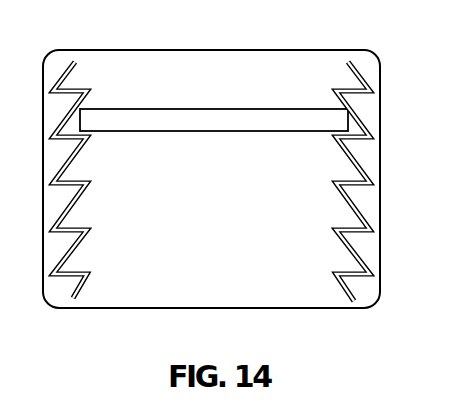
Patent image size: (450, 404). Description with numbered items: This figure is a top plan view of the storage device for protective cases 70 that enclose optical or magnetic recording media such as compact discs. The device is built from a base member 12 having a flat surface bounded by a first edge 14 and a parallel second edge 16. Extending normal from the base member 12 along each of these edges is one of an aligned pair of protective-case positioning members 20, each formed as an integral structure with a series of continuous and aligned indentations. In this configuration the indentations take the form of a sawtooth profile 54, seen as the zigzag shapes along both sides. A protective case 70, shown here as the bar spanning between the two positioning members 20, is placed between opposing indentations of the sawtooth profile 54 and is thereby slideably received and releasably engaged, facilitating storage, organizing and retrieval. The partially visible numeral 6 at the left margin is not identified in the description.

The base member 12 is at (252, 62).
The first edge 14 is at (43, 252).
The second edge 16 is at (382, 207).
The wall (partially visible numeral) 6 is at (6, 180).
The protective case 70 is at (137, 117).
The protective-case positioning member 20 is at (234, 184).
The sawtooth profile 54 is at (368, 77).